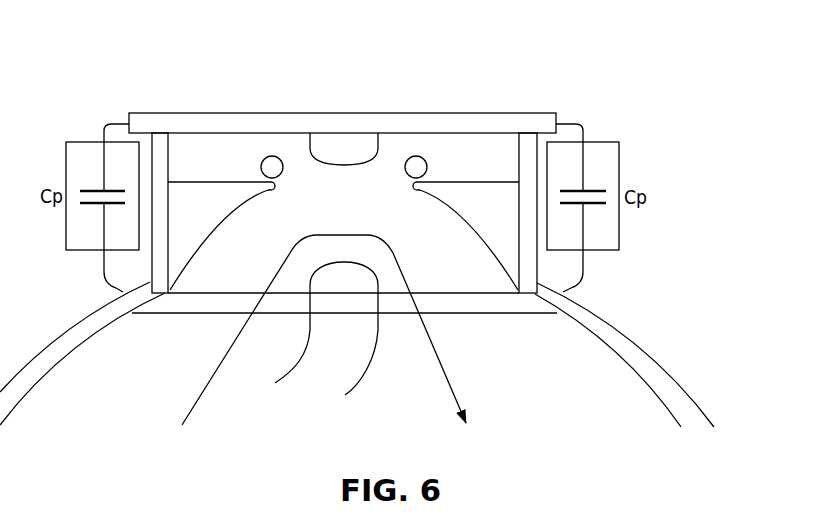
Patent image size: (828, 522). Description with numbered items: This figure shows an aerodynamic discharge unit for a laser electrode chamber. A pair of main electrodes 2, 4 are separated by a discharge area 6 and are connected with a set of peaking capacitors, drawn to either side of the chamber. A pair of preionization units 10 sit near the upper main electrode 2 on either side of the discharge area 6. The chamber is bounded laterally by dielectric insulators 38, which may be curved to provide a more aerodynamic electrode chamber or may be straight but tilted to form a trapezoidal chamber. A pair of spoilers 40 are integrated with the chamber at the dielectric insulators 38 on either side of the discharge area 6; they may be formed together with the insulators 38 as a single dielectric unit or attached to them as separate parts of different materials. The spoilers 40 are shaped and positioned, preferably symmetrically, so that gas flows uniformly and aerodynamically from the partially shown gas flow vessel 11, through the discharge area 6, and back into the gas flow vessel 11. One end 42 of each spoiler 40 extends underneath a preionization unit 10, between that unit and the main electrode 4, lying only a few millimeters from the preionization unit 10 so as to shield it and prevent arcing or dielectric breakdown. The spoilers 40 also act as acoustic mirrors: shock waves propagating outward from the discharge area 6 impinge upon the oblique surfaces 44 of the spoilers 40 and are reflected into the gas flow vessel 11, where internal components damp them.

The main electrode 2 is at (338, 160).
The main electrode 4 is at (338, 289).
The discharge area 6 is at (338, 221).
The preionization unit 10 is at (282, 172).
The gas flow vessel 11 is at (603, 331).
The dielectric insulators 38 is at (527, 138).
The spoilers 40 is at (343, 166).
The end of spoiler 42 is at (271, 194).
The oblique surfaces 44 is at (219, 236).